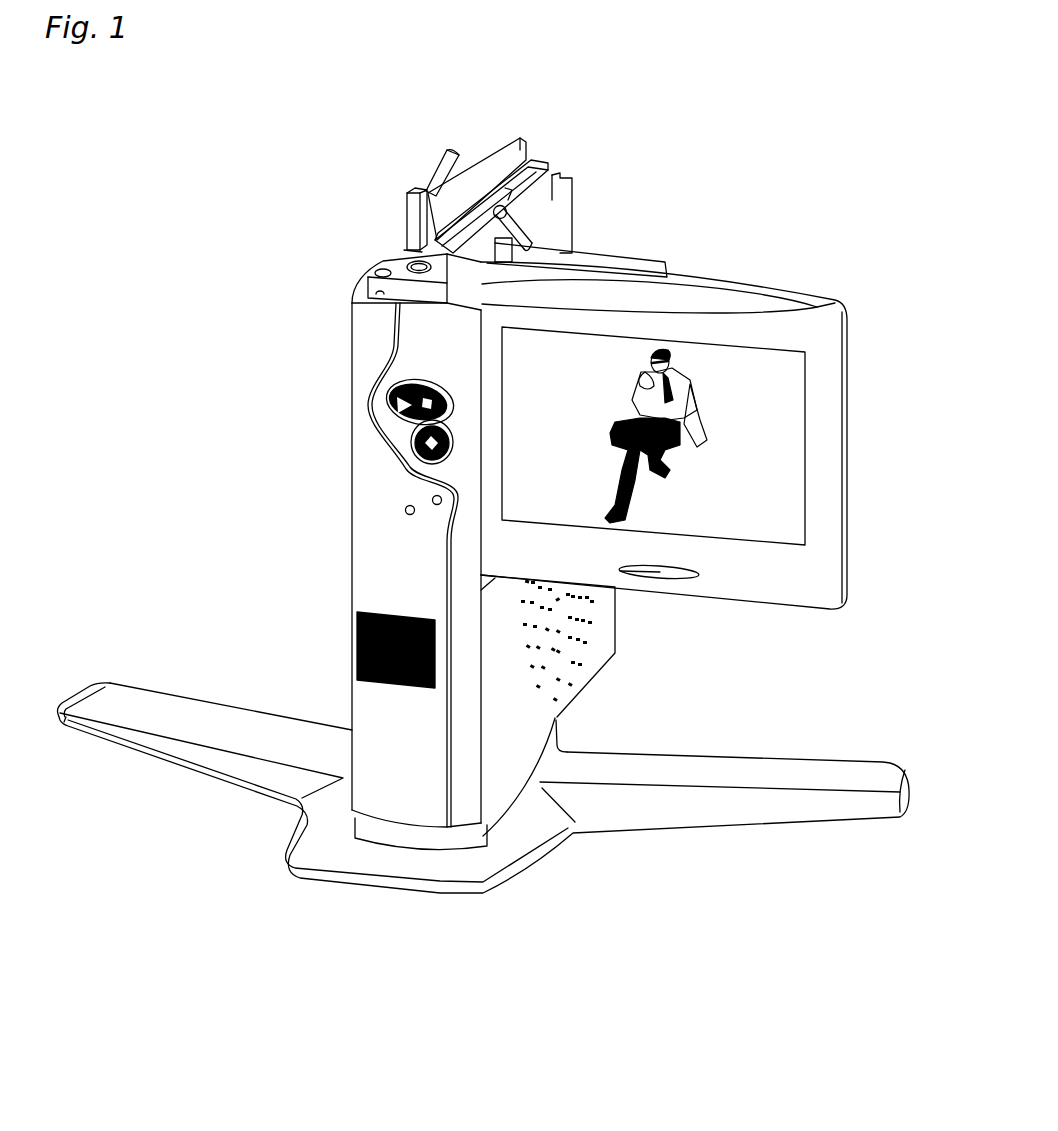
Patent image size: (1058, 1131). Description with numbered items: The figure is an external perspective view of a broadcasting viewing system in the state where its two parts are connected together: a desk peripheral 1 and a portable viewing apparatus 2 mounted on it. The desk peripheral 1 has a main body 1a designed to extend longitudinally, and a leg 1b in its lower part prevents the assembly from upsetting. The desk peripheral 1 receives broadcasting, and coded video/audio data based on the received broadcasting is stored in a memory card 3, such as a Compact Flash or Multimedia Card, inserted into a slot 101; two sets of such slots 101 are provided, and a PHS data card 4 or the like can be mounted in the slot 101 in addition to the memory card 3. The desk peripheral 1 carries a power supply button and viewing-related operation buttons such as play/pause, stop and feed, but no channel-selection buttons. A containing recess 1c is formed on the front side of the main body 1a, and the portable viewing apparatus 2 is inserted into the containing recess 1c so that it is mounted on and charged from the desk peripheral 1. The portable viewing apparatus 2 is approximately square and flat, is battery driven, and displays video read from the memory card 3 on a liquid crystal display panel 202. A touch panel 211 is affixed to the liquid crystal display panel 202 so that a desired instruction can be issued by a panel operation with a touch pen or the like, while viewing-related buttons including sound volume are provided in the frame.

The desk peripheral 1 is at (358, 266).
The main body 1a is at (356, 487).
The leg 1b is at (415, 865).
The containing recess 1c is at (376, 300).
The portable viewing apparatus 2 is at (780, 281).
The memory card 3 is at (535, 167).
The PHS data card 4 is at (483, 153).
The slot 101 is at (407, 243).
The liquid crystal display panel 202 is at (653, 501).
The touch panel 211 is at (733, 533).